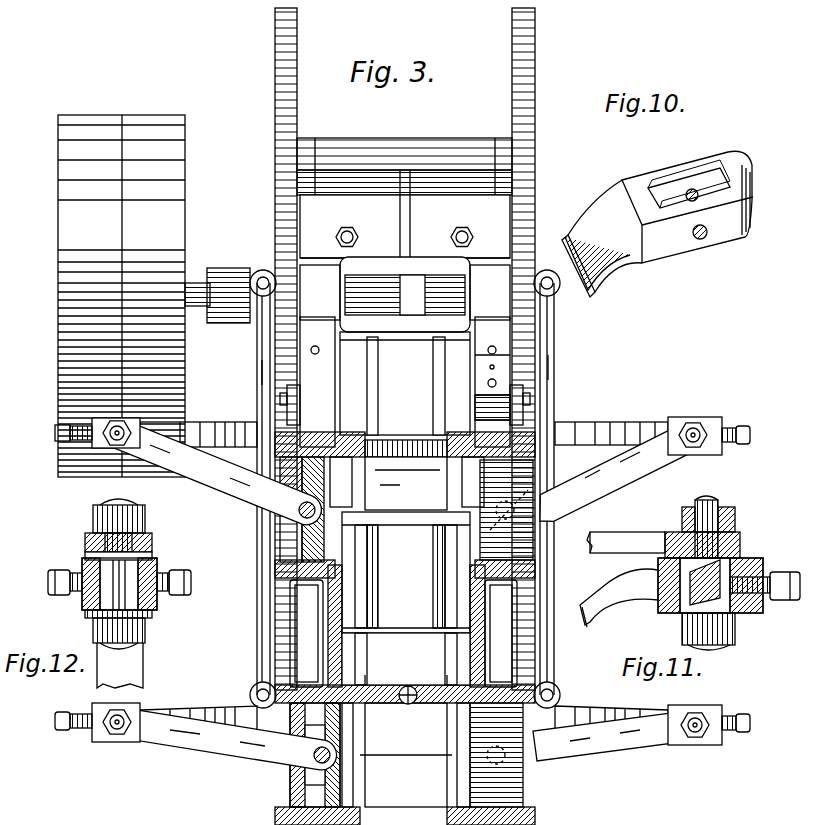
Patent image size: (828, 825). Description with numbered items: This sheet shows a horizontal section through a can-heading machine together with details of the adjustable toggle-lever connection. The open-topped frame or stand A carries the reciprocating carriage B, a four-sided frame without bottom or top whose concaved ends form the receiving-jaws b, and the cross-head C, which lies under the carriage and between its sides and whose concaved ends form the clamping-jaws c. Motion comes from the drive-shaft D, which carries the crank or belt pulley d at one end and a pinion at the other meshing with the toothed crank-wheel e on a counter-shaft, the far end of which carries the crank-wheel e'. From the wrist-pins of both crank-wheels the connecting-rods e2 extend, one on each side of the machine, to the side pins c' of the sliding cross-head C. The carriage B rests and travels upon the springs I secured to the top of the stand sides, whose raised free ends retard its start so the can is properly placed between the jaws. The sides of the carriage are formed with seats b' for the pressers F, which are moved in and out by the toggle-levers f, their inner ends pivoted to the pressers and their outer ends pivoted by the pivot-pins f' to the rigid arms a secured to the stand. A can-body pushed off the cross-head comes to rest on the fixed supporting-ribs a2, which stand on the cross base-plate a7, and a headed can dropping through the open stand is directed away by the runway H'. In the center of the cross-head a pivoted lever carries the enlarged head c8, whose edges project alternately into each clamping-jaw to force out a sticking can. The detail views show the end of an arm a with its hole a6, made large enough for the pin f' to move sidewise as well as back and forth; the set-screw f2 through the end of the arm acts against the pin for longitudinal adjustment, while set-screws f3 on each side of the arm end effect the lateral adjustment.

In FIG. 3, the crank-wheel e' is at (274, 349).
In FIG. 3, the toothed crank-wheel e is at (532, 349).
In FIG. 3, the connecting-rods e2 is at (572, 357).
In FIG. 3, the crank or belt pulley d is at (121, 296).
In FIG. 3, the drive-shaft D is at (200, 283).
In FIG. 3, the frame or stand A is at (405, 292).
In FIG. 3, the springs I is at (497, 380).
In FIG. 3, the runway H' is at (405, 383).
In FIG. 3, the side pins c' is at (410, 489).
In FIG. 3, the seats b' is at (415, 614).
In FIG. 3, the receiving-jaws b is at (406, 623).
In FIG. 3, the carriage B is at (403, 619).
In FIG. 3, the cross base-plate a7 is at (406, 572).
In FIG. 3, the fixed supporting-ribs a2 is at (440, 598).
In FIG. 3, the cross-head C is at (405, 679).
In FIG. 3, the enlarged head c8 is at (408, 686).
In FIG. 3, the clamping-jaws c is at (406, 674).
In FIG. 3, the pressers F is at (258, 777).
In FIG. 3, the rigid arms a is at (227, 425).
In FIG. 10, the rigid arms a is at (602, 238).
In FIG. 11, the rigid arms a is at (760, 620).
In FIG. 12, the rigid arms a is at (173, 608).
In FIG. 3, the toggle-levers f is at (405, 594).
In FIG. 11, the toggle-levers f is at (663, 533).
In FIG. 12, the toggle-levers f is at (107, 572).
In FIG. 3, the pivot-pins f' is at (407, 577).
In FIG. 11, the pivot-pins f' is at (714, 565).
In FIG. 12, the pivot-pins f' is at (136, 574).
In FIG. 3, the set-screw f2 is at (742, 733).
In FIG. 11, the set-screw f2 is at (765, 578).
In FIG. 12, the set-screws f3 is at (197, 574).
In FIG. 10, the hole a6 is at (712, 178).